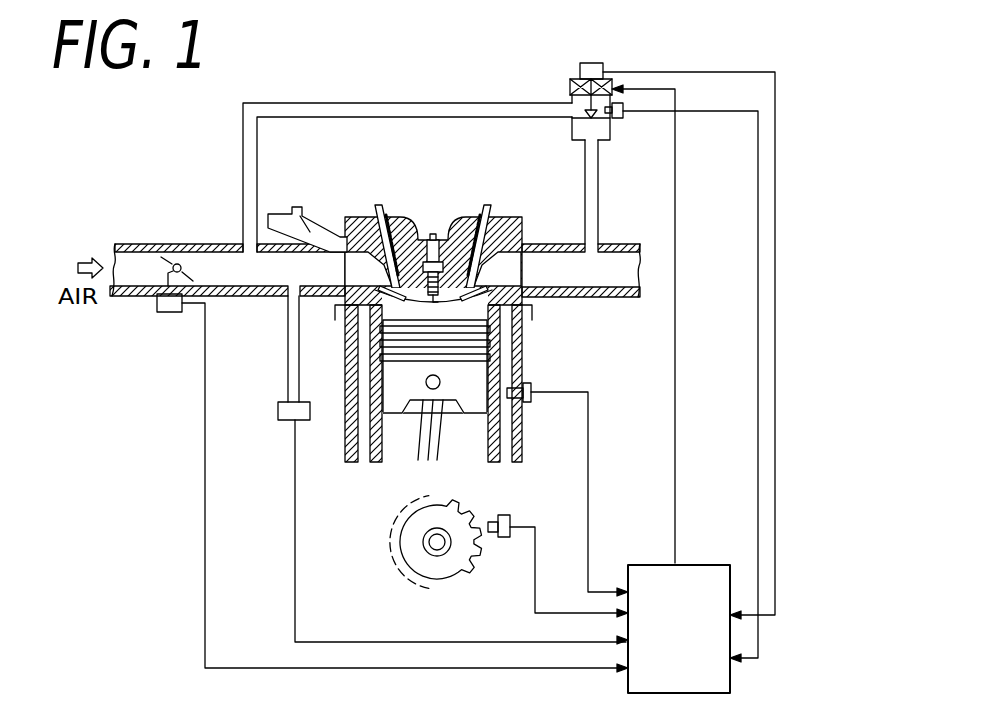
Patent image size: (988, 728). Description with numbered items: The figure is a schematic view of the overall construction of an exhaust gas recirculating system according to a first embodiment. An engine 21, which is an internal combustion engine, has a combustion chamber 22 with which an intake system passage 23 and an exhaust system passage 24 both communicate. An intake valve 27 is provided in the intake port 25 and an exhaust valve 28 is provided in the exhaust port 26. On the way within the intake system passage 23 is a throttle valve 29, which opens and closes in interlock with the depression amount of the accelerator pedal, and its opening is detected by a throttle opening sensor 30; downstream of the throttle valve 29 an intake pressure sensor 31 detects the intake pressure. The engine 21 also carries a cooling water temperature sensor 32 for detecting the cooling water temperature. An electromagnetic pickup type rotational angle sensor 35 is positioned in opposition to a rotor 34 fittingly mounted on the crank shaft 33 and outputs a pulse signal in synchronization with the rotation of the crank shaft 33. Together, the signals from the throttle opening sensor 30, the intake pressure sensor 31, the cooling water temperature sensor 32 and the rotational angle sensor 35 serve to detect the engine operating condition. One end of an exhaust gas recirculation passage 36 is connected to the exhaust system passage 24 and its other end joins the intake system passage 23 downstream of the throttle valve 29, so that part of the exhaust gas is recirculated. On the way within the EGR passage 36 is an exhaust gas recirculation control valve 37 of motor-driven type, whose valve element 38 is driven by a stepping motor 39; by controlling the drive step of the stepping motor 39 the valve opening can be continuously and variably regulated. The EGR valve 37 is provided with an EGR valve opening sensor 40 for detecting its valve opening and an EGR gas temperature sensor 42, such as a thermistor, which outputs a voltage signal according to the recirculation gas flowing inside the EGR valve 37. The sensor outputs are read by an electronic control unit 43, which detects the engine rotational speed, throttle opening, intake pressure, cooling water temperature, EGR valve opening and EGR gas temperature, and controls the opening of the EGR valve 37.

The engine 21 is at (434, 212).
The combustion chamber 22 is at (486, 338).
The intake system passage 23 is at (150, 243).
The exhaust system passage 24 is at (618, 244).
The intake port 25 is at (362, 262).
The exhaust port 26 is at (508, 268).
The intake valve 27 is at (415, 299).
The exhaust valve 28 is at (526, 309).
The throttle valve 29 is at (178, 251).
The throttle opening sensor 30 is at (168, 313).
The intake pressure sensor 31 is at (290, 421).
The cooling water temperature sensor 32 is at (533, 386).
The crank shaft 33 is at (442, 552).
The rotor 34 is at (396, 537).
The rotational angle sensor 35 is at (505, 515).
The exhaust gas recirculation passage 36 is at (416, 103).
The exhaust gas recirculation control valve 37 is at (563, 55).
The valve element 38 is at (572, 124).
The stepping motor 39 is at (570, 88).
The EGR valve opening sensor 40 is at (602, 66).
The EGR gas temperature sensor 42 is at (621, 119).
The electronic control unit 43 is at (705, 694).